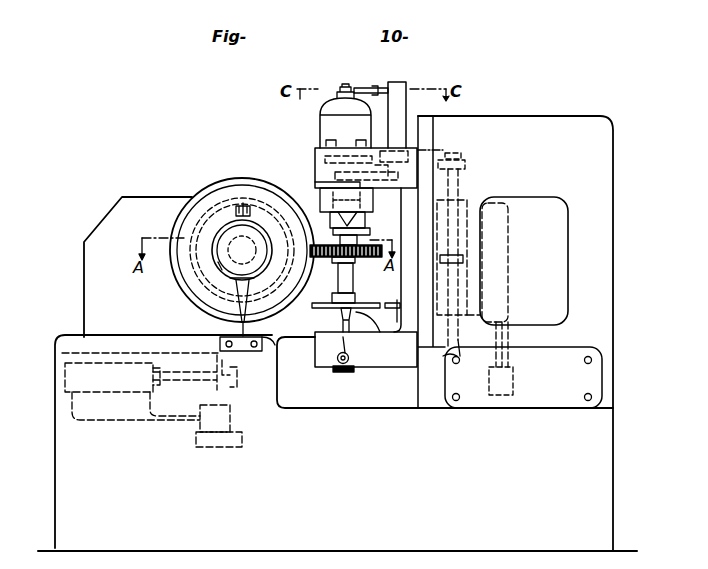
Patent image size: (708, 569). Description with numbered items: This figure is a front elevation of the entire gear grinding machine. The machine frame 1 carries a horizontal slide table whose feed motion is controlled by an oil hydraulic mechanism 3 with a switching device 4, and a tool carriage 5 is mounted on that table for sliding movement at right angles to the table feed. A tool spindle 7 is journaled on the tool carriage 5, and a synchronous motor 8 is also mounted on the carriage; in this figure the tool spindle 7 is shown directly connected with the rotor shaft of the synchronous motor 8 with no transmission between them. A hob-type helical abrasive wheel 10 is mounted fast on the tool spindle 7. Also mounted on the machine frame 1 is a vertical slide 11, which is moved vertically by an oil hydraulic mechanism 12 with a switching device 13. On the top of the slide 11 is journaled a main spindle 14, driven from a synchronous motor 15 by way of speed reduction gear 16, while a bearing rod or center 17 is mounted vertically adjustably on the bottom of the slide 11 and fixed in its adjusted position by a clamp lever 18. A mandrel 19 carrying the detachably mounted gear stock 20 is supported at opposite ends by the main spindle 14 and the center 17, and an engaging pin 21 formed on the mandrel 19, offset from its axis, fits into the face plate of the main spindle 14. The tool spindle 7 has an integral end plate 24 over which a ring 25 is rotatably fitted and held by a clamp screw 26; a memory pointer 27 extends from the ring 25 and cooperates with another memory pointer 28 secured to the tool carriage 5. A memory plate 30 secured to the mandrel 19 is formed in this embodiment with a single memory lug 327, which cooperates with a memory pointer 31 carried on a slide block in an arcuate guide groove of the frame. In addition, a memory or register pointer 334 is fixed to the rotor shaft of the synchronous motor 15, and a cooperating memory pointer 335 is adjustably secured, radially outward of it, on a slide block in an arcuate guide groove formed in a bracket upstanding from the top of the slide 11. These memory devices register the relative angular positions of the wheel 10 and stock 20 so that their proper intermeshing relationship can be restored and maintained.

The machine frame 1 is at (62, 466).
The oil hydraulic mechanism 3 is at (65, 378).
The switching device 4 is at (215, 432).
The tool carriage 5 is at (116, 218).
The tool spindle 7 is at (216, 230).
The synchronous motor 8 is at (192, 222).
The hob-type helical abrasive wheel 10 is at (276, 200).
The vertical slide 11 is at (408, 180).
The oil hydraulic mechanism 12 is at (456, 198).
The switching device 13 is at (513, 383).
The main spindle 14 is at (366, 221).
The synchronous motor 15 is at (322, 134).
The speed reduction gear 16 is at (320, 162).
The bearing rod or center 17 is at (348, 338).
The clamp lever 18 is at (343, 373).
The mandrel 19 is at (340, 283).
The gear stock 20 is at (360, 270).
The engaging pin 21 is at (362, 233).
The end plate 24 is at (221, 257).
The ring 25 is at (222, 270).
The clamp screw 26 is at (243, 205).
The memory pointer 27 is at (244, 290).
The memory pointer 28 is at (262, 345).
The memory plate 30 is at (330, 318).
The memory pointer 31 is at (395, 304).
The memory lug 327 is at (366, 349).
The memory or register pointer 334 is at (362, 87).
The cooperating memory pointer 335 is at (392, 82).